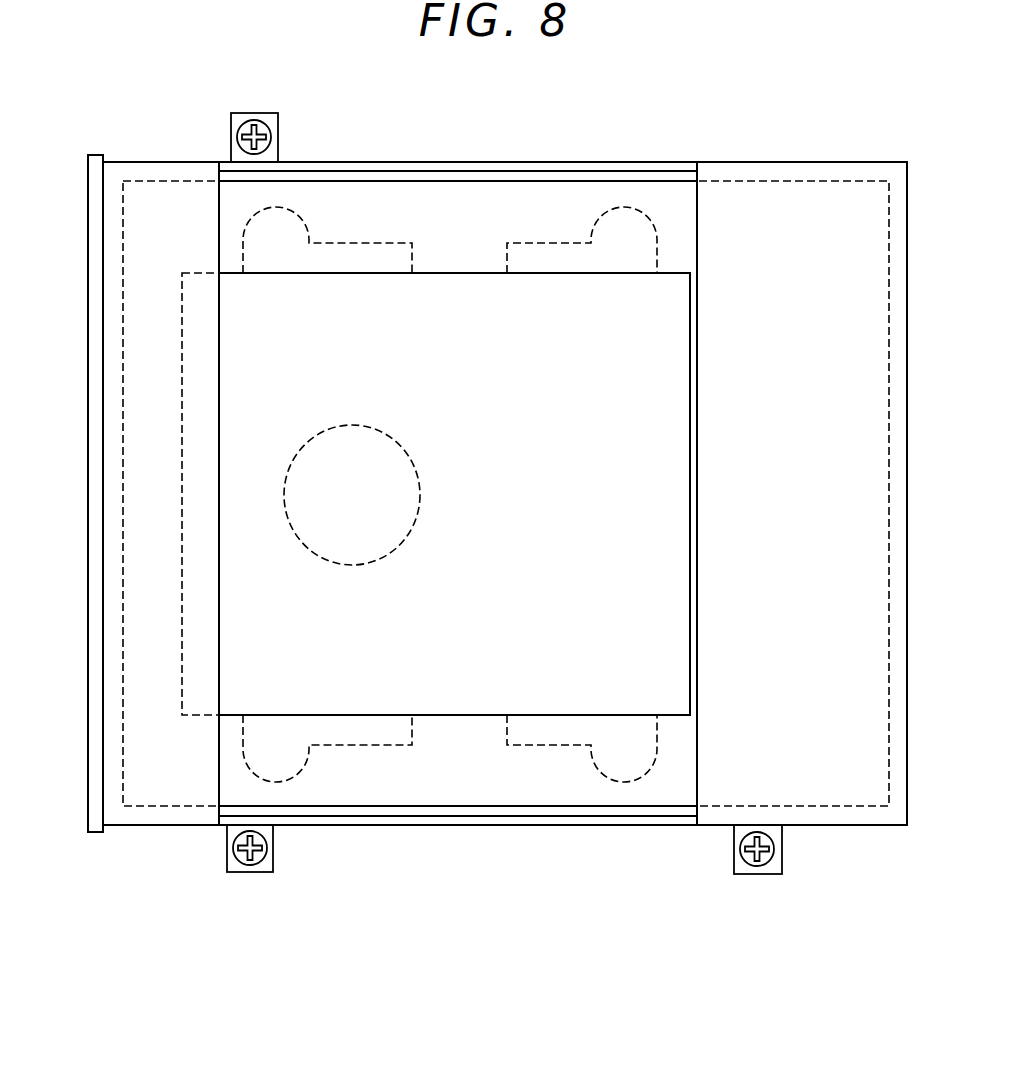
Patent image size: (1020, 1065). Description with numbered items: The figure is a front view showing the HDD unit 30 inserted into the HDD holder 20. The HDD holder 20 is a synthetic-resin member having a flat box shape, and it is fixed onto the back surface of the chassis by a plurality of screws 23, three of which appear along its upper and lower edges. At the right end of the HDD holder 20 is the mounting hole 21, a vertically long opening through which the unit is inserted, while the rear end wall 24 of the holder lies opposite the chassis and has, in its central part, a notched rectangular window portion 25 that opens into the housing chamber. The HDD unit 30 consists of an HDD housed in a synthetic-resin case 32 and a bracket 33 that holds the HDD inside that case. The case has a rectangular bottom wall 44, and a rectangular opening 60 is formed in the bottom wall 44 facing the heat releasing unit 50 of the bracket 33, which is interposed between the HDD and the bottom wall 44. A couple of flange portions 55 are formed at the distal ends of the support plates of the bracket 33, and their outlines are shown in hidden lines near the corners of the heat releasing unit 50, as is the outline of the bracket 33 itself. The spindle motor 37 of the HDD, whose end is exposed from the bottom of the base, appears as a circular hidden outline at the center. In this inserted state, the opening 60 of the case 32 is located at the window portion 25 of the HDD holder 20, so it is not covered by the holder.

The HDD holder 20 is at (757, 162).
The mounting hole 21 is at (88, 178).
The screws 23 is at (256, 125).
The rear end wall 24 is at (880, 495).
The window portion 25 is at (690, 762).
The HDD unit 30 is at (447, 206).
The case 32 is at (558, 186).
The bracket 33 is at (226, 695).
The spindle motor 37 is at (412, 487).
The bottom wall 44 is at (448, 795).
The heat releasing unit 50 is at (690, 341).
The flange portions 55 is at (300, 221).
The opening 60 is at (690, 430).